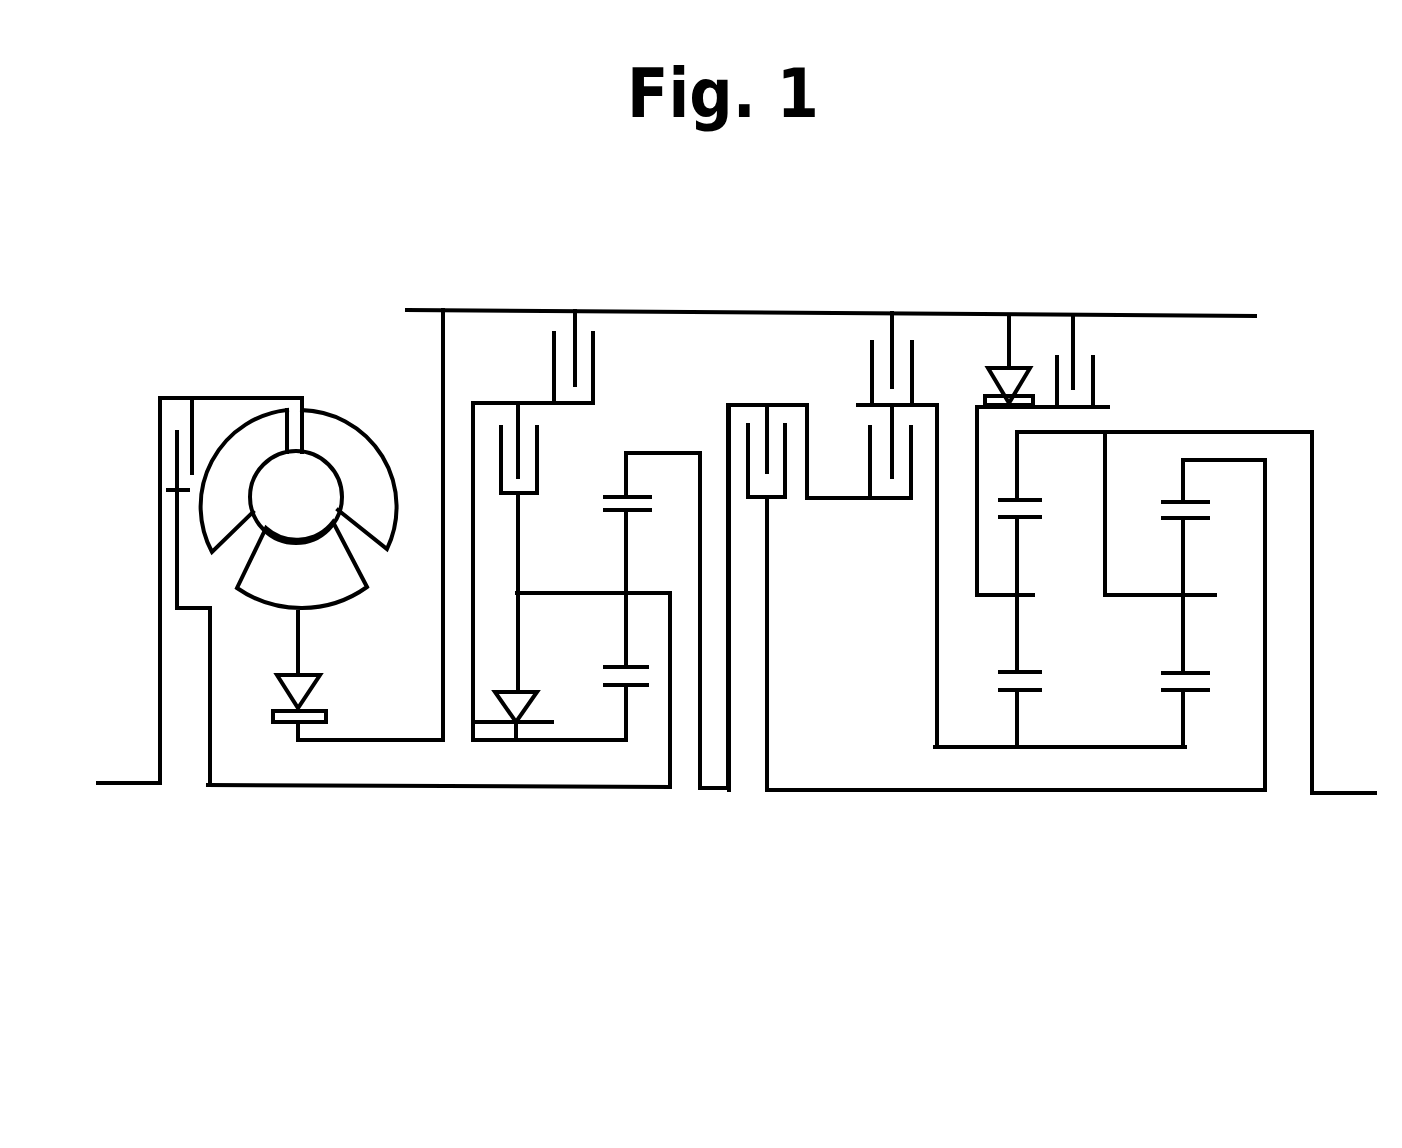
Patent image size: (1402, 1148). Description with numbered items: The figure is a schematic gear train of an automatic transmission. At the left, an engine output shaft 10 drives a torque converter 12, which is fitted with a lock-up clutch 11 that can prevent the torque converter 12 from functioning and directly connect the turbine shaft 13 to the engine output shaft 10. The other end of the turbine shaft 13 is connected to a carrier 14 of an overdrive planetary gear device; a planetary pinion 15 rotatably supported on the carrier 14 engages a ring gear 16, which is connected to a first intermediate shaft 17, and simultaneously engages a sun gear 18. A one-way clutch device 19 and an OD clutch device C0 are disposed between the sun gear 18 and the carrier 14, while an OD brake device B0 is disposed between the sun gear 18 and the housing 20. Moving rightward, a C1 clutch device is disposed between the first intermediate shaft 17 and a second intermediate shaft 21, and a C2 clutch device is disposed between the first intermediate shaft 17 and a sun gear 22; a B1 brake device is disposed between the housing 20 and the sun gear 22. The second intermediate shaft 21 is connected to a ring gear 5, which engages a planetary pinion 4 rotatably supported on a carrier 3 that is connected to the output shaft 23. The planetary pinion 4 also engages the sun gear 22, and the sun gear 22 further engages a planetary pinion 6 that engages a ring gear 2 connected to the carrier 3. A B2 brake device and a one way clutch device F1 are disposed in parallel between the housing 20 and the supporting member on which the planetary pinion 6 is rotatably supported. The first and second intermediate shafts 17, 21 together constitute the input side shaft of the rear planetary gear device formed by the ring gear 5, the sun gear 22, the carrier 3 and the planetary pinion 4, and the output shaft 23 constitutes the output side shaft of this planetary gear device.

The engine output shaft 10 is at (132, 786).
The lock-up clutch 11 is at (212, 428).
The torque converter 12 is at (356, 403).
The turbine shaft 13 is at (415, 788).
The carrier 14 is at (653, 592).
The planetary pinion 15 is at (622, 553).
The ring gear 16 is at (622, 478).
The first intermediate shaft 17 is at (712, 790).
The sun gear 18 is at (628, 715).
The one-way clutch device 19 is at (515, 754).
The housing 20 is at (693, 312).
The second intermediate shaft 21 is at (843, 791).
The sun gear 22 is at (1093, 748).
The output shaft 23 is at (1345, 795).
The ring gear 2 is at (1018, 497).
The carrier 3 is at (1078, 435).
The planetary pinion 4 is at (1185, 552).
The ring gear 5 is at (1183, 473).
The planetary pinion 6 is at (1020, 567).
The OD clutch device C0 is at (498, 382).
The OD brake device B0 is at (605, 360).
The C1 clutch device C1 is at (768, 382).
The B1 brake device B1 is at (858, 366).
The C2 clutch device C2 is at (916, 424).
The one way clutch device F1 is at (1022, 352).
The B2 brake device B2 is at (1106, 353).